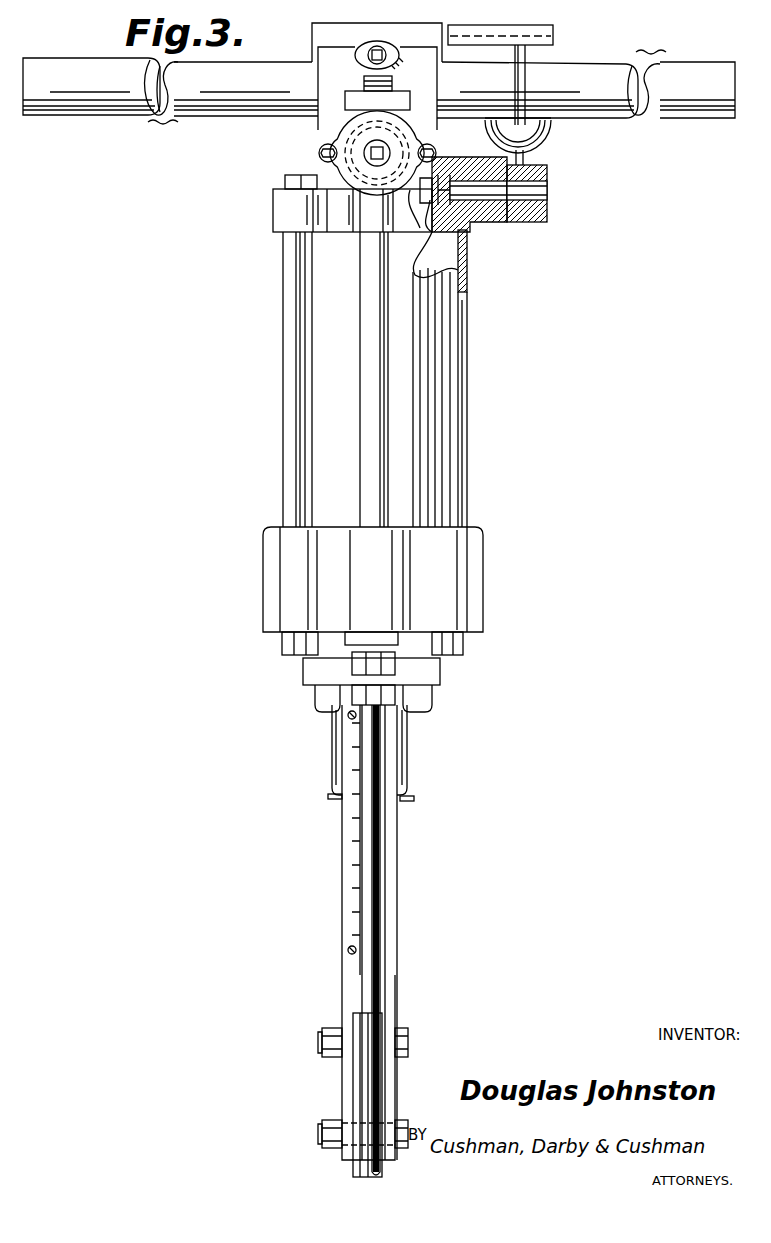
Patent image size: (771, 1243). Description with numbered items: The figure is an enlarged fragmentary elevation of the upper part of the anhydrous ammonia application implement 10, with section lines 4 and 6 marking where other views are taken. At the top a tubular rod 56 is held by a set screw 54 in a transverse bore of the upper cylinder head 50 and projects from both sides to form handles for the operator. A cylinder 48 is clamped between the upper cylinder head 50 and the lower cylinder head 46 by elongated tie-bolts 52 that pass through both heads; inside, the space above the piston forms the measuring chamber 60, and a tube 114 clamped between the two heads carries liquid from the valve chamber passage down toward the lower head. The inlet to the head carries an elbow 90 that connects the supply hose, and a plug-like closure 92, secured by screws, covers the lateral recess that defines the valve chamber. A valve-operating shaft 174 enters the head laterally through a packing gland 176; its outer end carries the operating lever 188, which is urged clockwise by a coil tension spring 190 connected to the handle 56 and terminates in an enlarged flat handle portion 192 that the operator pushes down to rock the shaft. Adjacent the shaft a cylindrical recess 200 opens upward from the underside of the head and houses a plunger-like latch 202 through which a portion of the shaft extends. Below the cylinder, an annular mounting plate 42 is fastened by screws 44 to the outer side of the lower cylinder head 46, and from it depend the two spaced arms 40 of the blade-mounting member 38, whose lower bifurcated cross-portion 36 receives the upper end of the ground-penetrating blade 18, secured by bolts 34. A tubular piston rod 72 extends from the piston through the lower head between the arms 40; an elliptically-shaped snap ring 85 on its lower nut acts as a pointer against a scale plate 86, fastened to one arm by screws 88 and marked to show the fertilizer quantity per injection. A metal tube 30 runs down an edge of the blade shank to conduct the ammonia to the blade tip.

The implement 10 is at (382, 601).
The ground-penetrating blade 18 is at (340, 1174).
The metal tube 30 is at (386, 942).
The bolts 34 is at (322, 1040).
The bifurcated cross-portion 36 is at (396, 1002).
The blade-mounting member 38 is at (411, 901).
The arms 40 is at (388, 866).
The annular mounting plate 42 is at (440, 672).
The screws 44 is at (432, 698).
The lower cylinder head 46 is at (483, 572).
The cylinder 48 is at (283, 390).
The upper cylinder head 50 is at (273, 205).
The tie-bolts 52 is at (295, 457).
The set screw 54 is at (385, 52).
The tubular rod 56 is at (223, 118).
The measuring chamber 60 is at (455, 268).
The tubular piston rod 72 is at (332, 760).
The snap ring 85 is at (328, 797).
The scale plate 86 is at (342, 893).
The screws 88 is at (348, 716).
The elbow 90 is at (364, 82).
The plug-like closure 92 is at (340, 135).
The tube 114 is at (392, 395).
The valve-operating shaft 174 is at (547, 190).
The packing gland 176 is at (462, 165).
The operating lever 188 is at (533, 161).
The coil tension spring 190 is at (553, 128).
The handle portion 192 is at (553, 40).
The cylindrical recess 200 is at (418, 235).
The latch 202 is at (428, 238).
The section line 4- 4 is at (396, 18).
The section line 6- 6 is at (504, 19).